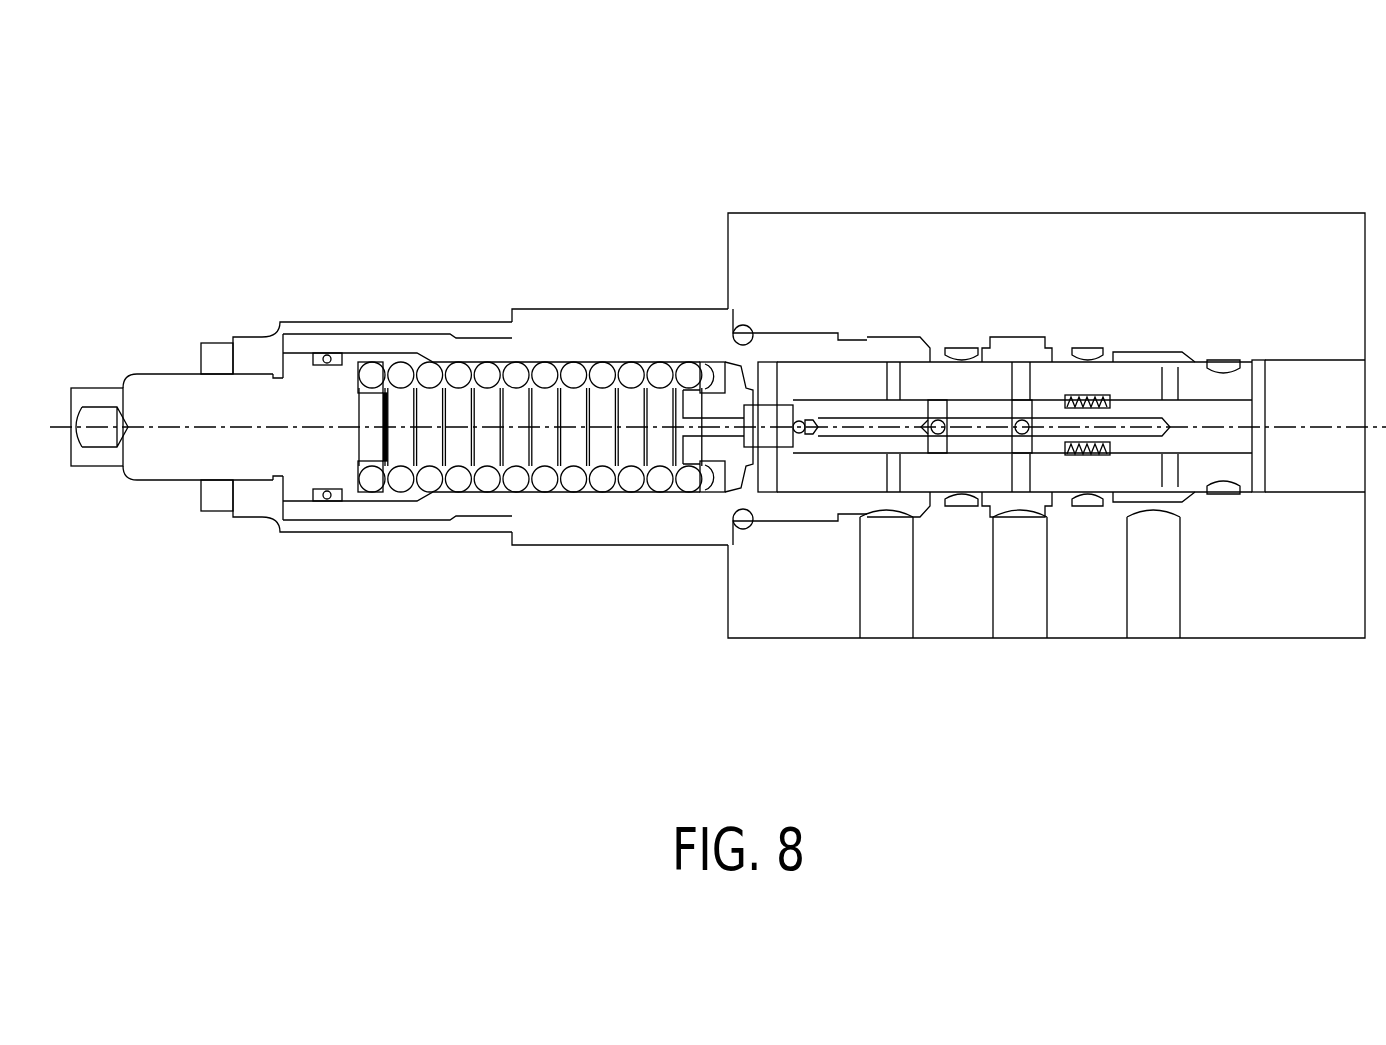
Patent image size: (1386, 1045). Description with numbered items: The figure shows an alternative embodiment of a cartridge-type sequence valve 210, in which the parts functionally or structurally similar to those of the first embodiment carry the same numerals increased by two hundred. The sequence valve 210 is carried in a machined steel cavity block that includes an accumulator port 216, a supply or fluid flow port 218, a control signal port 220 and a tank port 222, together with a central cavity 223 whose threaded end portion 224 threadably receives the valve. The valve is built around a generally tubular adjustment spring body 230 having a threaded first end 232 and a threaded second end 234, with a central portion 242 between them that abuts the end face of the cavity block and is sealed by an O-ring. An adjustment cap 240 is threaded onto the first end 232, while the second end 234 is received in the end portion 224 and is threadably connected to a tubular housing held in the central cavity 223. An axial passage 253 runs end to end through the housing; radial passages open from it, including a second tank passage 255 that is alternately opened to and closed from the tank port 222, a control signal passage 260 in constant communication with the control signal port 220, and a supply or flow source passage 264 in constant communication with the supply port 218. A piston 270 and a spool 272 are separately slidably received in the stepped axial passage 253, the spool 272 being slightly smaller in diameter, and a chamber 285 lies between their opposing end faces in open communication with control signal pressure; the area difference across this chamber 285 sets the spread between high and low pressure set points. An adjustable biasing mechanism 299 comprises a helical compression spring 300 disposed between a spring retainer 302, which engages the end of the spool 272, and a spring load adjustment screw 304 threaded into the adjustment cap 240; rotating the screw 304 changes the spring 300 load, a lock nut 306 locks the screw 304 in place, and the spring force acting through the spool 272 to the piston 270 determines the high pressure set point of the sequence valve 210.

The sequence valve 210 is at (1326, 166).
The accumulator port 216 is at (1340, 468).
The supply or fluid flow port 218 is at (1140, 622).
The control signal port 220 is at (1012, 607).
The tank port 222 is at (893, 612).
The central cavity 223 is at (1322, 375).
The threaded end portion 224 is at (795, 617).
The adjustment spring body 230 is at (509, 543).
The first end 232 is at (446, 503).
The second end 234 is at (777, 506).
The adjustment cap 240 is at (242, 507).
The central portion 242 is at (595, 530).
The axial passage 253 is at (1244, 412).
The second tank passage 255 is at (893, 352).
The control signal passage 260 is at (1020, 365).
The supply or flow source passage 264 is at (1153, 490).
The piston 270 is at (1208, 415).
The spool 272 is at (980, 405).
The chamber 285 is at (1078, 400).
The adjustable biasing mechanism 299 is at (178, 372).
The helical compression spring 300 is at (546, 378).
The spring retainer 302 is at (693, 390).
The spring load adjustment screw 304 is at (327, 357).
The lock nut 306 is at (213, 353).